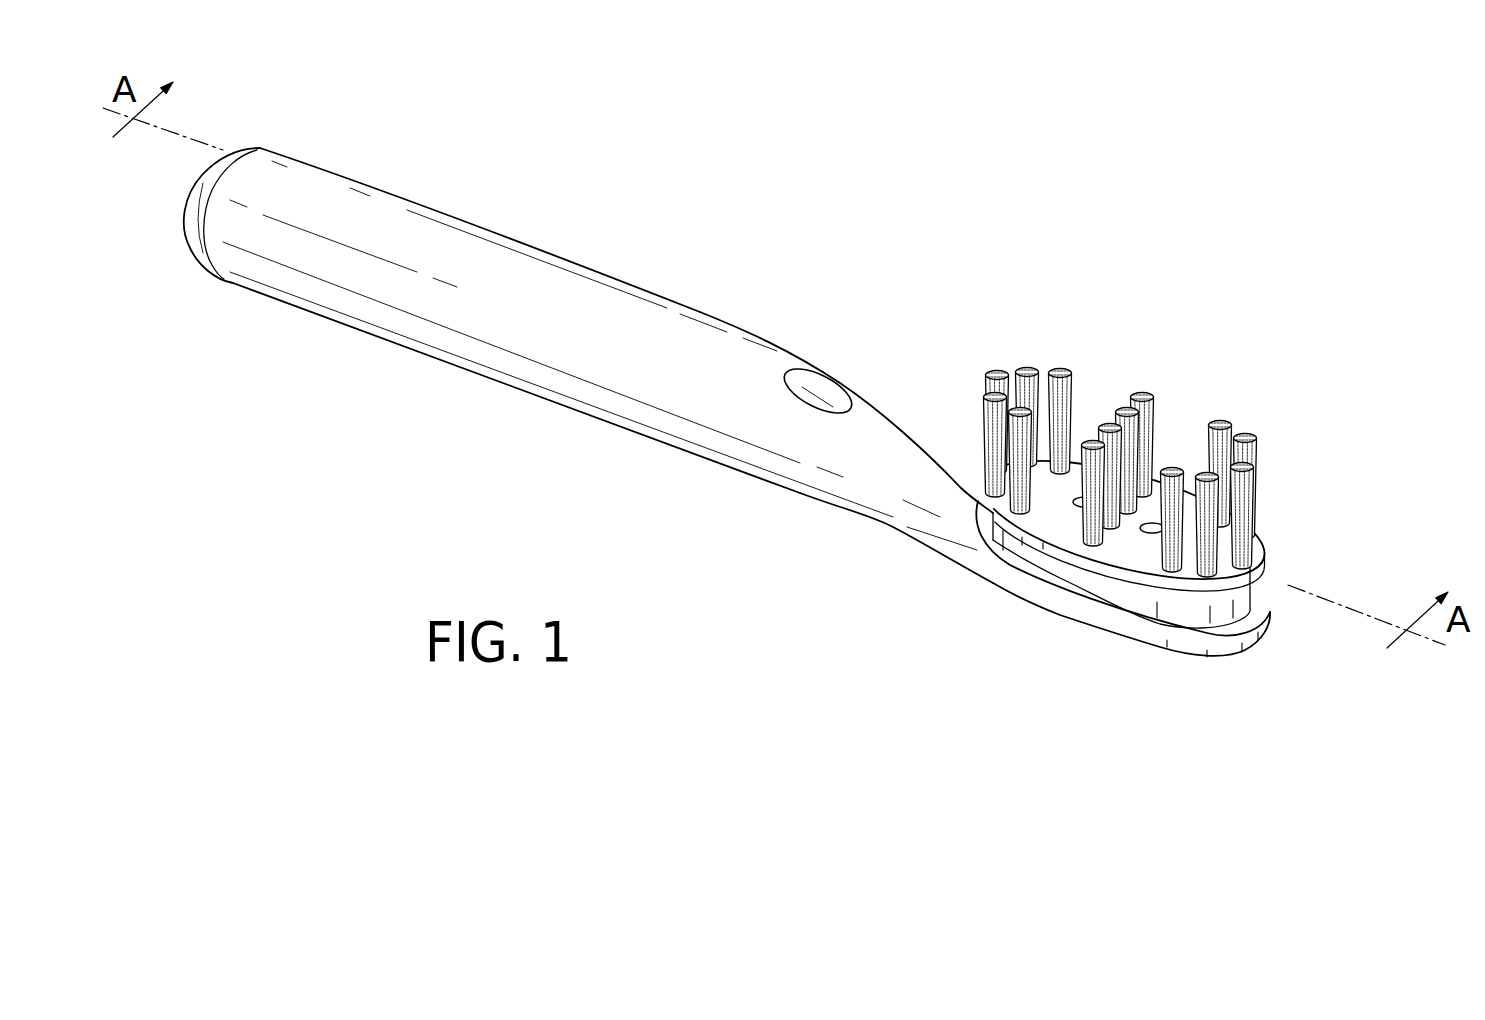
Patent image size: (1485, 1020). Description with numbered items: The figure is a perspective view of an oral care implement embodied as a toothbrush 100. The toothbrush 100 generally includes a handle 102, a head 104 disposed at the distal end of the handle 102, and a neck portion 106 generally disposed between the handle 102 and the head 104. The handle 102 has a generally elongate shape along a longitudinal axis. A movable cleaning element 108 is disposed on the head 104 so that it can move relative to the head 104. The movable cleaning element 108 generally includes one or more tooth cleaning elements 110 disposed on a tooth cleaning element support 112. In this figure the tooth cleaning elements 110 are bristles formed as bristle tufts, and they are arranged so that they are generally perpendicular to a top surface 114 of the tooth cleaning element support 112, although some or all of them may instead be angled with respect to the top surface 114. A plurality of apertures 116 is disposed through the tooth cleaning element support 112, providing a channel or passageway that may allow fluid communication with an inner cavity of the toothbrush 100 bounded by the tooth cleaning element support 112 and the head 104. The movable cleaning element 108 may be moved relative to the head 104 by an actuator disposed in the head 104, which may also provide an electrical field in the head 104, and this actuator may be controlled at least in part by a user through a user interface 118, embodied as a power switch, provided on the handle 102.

The toothbrush 100 is at (1293, 368).
The handle 102 is at (402, 320).
The head 104 is at (1263, 672).
The neck portion 106 is at (893, 447).
The movable cleaning element 108 is at (1167, 466).
The tooth cleaning elements 110 is at (1113, 393).
The tooth cleaning element support 112 is at (1153, 557).
The top surface 114 is at (1187, 517).
The apertures 116 is at (1073, 503).
The user interface 118 is at (817, 383).